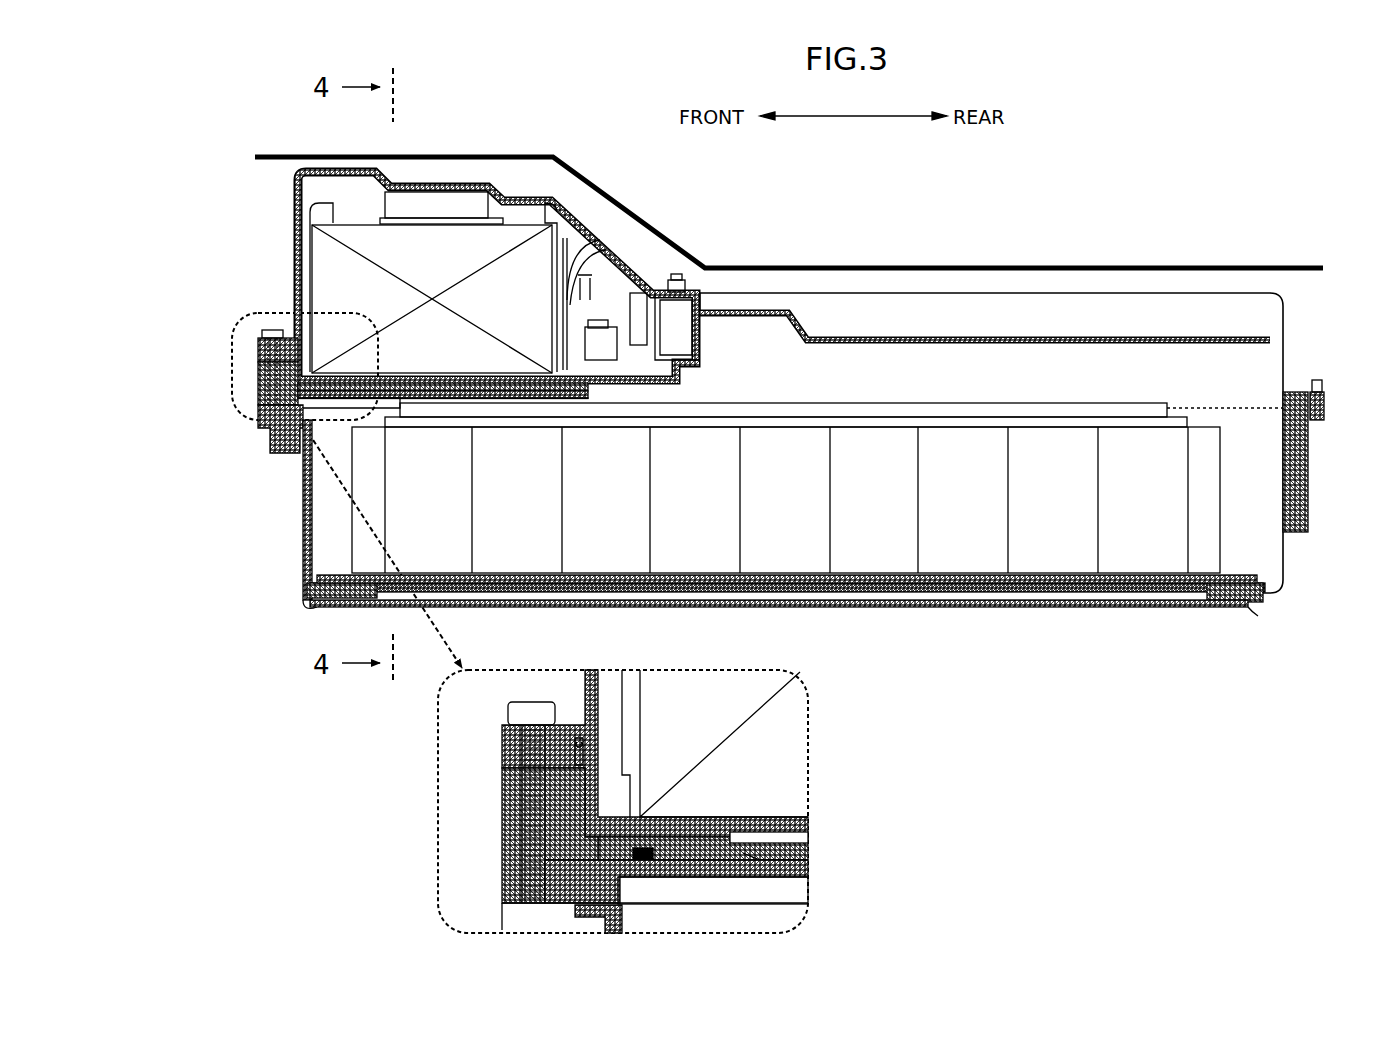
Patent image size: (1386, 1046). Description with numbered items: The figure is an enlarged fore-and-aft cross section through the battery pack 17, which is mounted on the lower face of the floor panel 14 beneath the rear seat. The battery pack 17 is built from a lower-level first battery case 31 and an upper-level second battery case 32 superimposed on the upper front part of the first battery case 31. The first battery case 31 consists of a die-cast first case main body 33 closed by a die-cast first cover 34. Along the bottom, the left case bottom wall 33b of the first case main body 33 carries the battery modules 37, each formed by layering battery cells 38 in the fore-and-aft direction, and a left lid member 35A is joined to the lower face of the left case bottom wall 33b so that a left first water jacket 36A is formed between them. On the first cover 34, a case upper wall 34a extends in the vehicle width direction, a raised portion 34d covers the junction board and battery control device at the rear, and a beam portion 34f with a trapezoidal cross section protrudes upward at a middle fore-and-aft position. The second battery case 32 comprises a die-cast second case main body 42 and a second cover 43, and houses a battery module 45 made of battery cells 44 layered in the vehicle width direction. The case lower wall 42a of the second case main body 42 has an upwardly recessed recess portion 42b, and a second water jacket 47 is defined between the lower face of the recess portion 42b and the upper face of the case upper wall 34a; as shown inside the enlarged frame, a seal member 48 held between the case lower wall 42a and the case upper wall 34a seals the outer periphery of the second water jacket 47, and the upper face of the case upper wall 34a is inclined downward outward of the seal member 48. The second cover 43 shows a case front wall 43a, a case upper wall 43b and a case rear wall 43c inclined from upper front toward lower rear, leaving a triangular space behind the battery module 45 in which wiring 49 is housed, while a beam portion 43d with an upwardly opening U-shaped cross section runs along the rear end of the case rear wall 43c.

The floor panel 14 is at (628, 284).
The battery pack 17 is at (495, 470).
The first battery case 31 is at (733, 575).
The second battery case 32 is at (519, 599).
The first case main body 33 is at (724, 691).
The left case bottom wall 33b is at (873, 592).
The first cover 34 is at (753, 556).
The case upper wall 34a is at (481, 400).
The raised portion 34d is at (1019, 292).
The beam portion 34f is at (770, 312).
The left lid member 35A is at (837, 607).
The left first water jacket 36A is at (952, 597).
The battery module 37 is at (1097, 394).
The battery cell 38 is at (633, 548).
The second case main body 42 is at (539, 602).
The case lower wall 42a is at (548, 372).
The recess portion 42b is at (417, 388).
The second cover 43 is at (255, 343).
The case front wall 43a is at (293, 272).
The case upper wall 43b is at (447, 182).
The case rear wall 43c is at (602, 250).
The beam portion 43d is at (683, 314).
The battery cell 44 is at (446, 264).
The battery module 45 is at (356, 200).
The second water jacket 47 is at (439, 388).
The seal member 48 is at (652, 850).
The wiring 49 is at (668, 278).